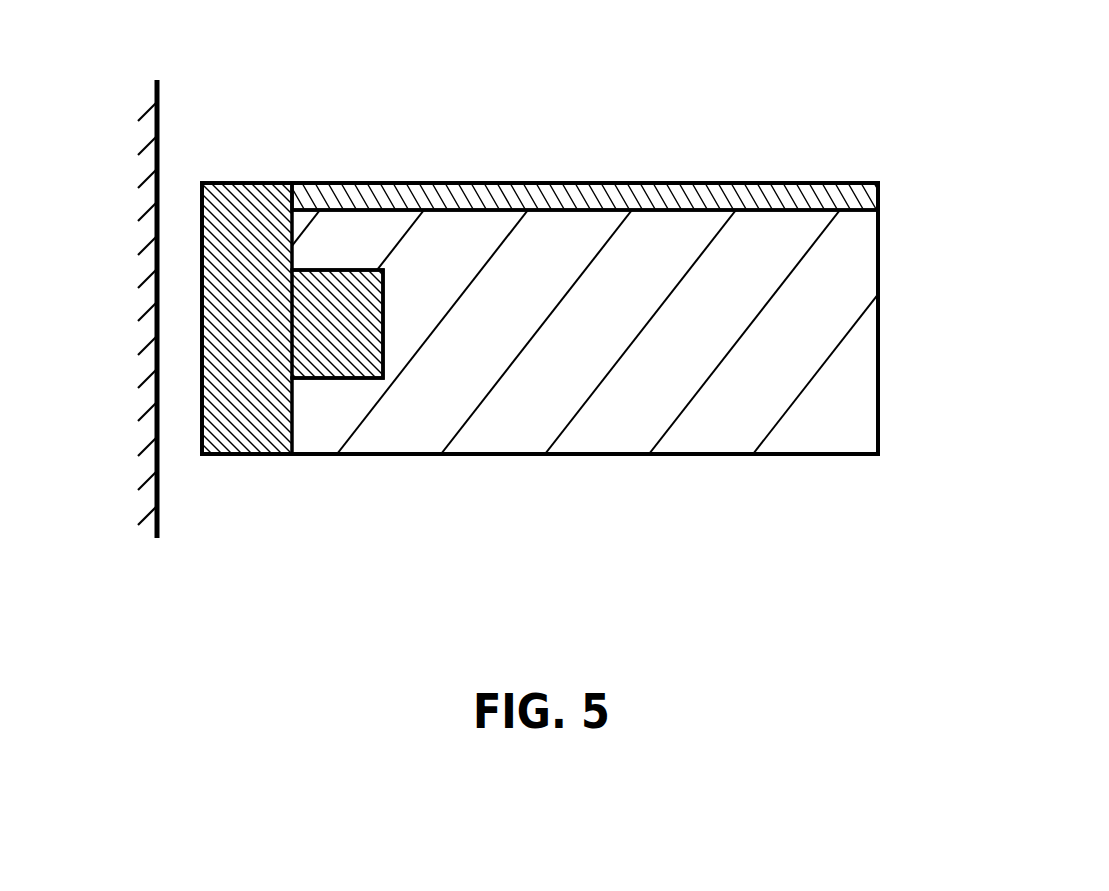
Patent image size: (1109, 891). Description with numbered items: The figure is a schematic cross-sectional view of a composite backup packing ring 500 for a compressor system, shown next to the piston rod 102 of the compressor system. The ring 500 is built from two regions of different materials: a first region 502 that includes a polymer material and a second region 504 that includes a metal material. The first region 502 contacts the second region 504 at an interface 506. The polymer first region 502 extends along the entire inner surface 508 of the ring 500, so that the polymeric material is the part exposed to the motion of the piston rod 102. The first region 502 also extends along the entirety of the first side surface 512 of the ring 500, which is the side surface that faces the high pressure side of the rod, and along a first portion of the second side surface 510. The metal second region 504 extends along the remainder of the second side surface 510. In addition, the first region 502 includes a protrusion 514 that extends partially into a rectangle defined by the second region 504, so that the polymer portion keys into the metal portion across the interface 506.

The piston rod 102 is at (154, 329).
The composite backup packing ring 500 is at (770, 100).
The first region 502 is at (220, 261).
The second region 504 is at (627, 326).
The interface 506 is at (832, 212).
The inner surface 508 is at (200, 395).
The second side surface 510 is at (413, 455).
The first side surface 512 is at (428, 182).
The protrusion 514 is at (320, 337).